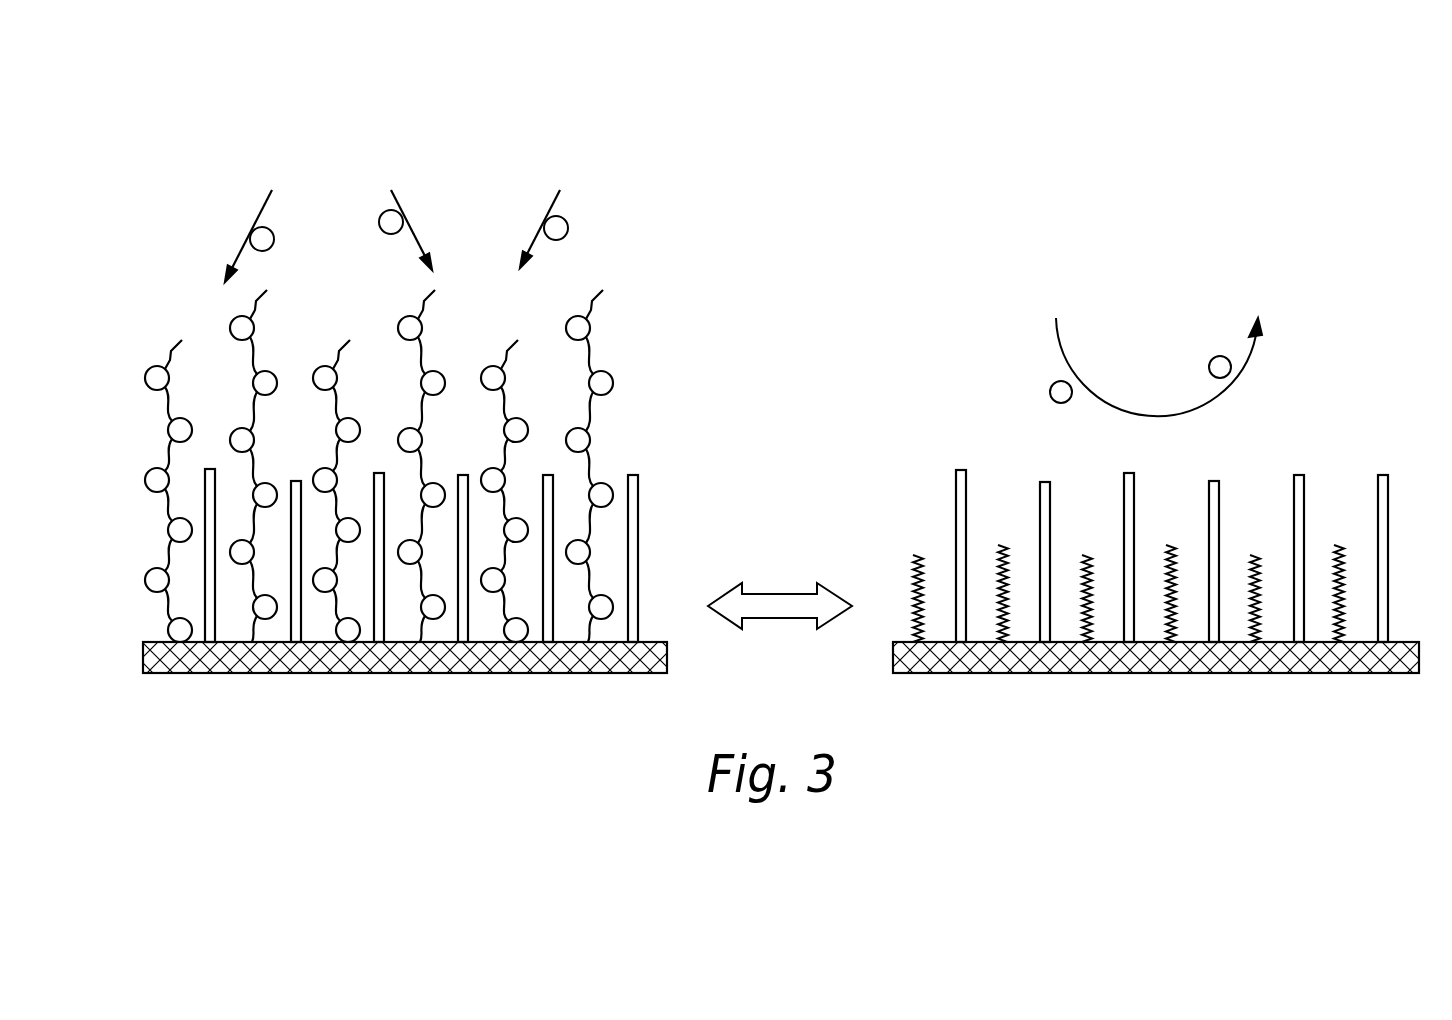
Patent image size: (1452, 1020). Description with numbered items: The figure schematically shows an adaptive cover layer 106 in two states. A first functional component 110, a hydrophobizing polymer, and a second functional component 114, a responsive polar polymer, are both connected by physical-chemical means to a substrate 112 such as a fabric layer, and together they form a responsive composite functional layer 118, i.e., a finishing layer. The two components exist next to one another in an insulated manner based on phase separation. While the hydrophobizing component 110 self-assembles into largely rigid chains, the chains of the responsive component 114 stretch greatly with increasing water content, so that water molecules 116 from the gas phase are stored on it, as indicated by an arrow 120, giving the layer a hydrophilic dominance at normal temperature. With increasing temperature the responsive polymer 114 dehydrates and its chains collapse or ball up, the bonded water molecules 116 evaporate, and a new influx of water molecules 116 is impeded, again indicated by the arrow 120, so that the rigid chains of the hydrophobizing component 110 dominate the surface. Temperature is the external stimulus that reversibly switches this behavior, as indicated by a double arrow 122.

The adaptive cover layer 106 is at (168, 117).
The first functional component 110 is at (207, 488).
The substrate 112 is at (275, 673).
The second functional component 114 is at (590, 468).
The water molecules 116 is at (385, 220).
The responsive composite functional layer 118 is at (596, 250).
The arrow 120 is at (250, 241).
The double arrow 122 is at (781, 603).